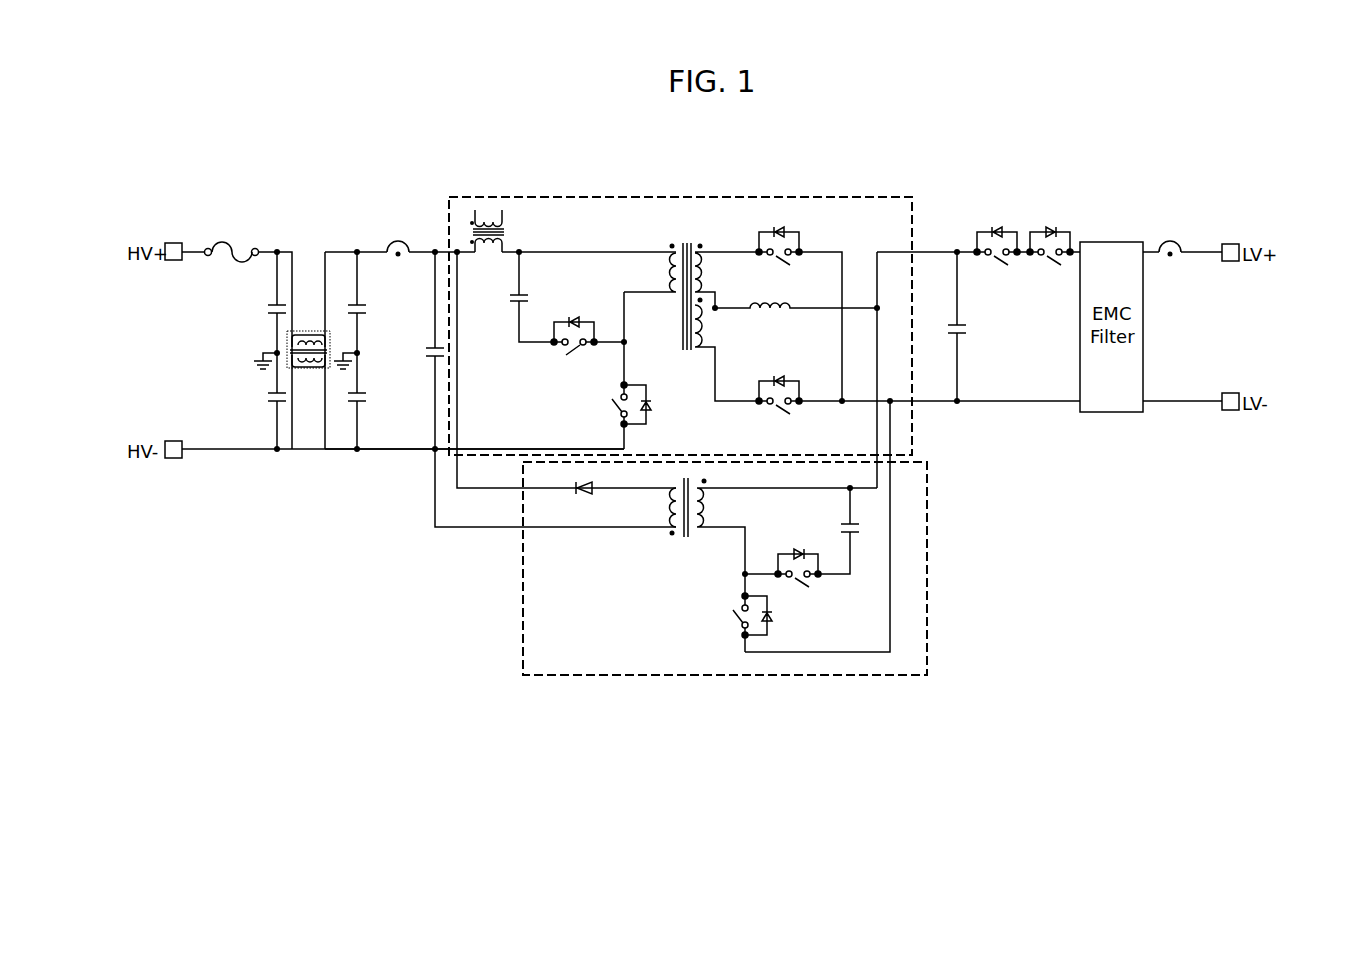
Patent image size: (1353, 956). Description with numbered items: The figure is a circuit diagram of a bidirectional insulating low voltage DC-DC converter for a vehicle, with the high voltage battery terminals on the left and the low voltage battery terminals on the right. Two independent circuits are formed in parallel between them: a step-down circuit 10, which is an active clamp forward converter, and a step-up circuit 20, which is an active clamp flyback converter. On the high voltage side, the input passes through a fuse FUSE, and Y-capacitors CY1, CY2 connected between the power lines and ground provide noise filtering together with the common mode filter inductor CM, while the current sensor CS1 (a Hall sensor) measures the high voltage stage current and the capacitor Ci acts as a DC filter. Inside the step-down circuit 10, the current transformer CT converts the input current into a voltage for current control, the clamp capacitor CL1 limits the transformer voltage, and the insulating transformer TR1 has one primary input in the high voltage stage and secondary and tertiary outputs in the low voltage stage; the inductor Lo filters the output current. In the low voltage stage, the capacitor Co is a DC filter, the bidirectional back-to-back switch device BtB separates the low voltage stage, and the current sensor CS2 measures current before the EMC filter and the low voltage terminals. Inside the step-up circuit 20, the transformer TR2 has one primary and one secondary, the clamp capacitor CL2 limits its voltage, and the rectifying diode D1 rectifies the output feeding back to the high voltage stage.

The step-down circuit 10 is at (680, 310).
The step-up circuit 20 is at (707, 568).
The fuse FUSE is at (232, 241).
The Y-CAP CY1 is at (261, 342).
The Y-CAP CY2 is at (371, 342).
The CM filter CM is at (308, 362).
The current sensor CS1 is at (395, 240).
The DC filter Ci is at (422, 353).
The current transformer CT is at (487, 243).
The rectifying diode D1 is at (584, 501).
The clamp capacitor CL1 is at (538, 297).
The insulating transformer TR1 is at (690, 310).
The inductor Lo is at (796, 320).
The DC filter Co is at (971, 330).
The bidirectional back-to-back semiconductor switch device BtB is at (1023, 234).
The current sensor CS2 is at (1172, 237).
The transformer TR2 is at (754, 520).
The clamp capacitor CL2 is at (829, 531).